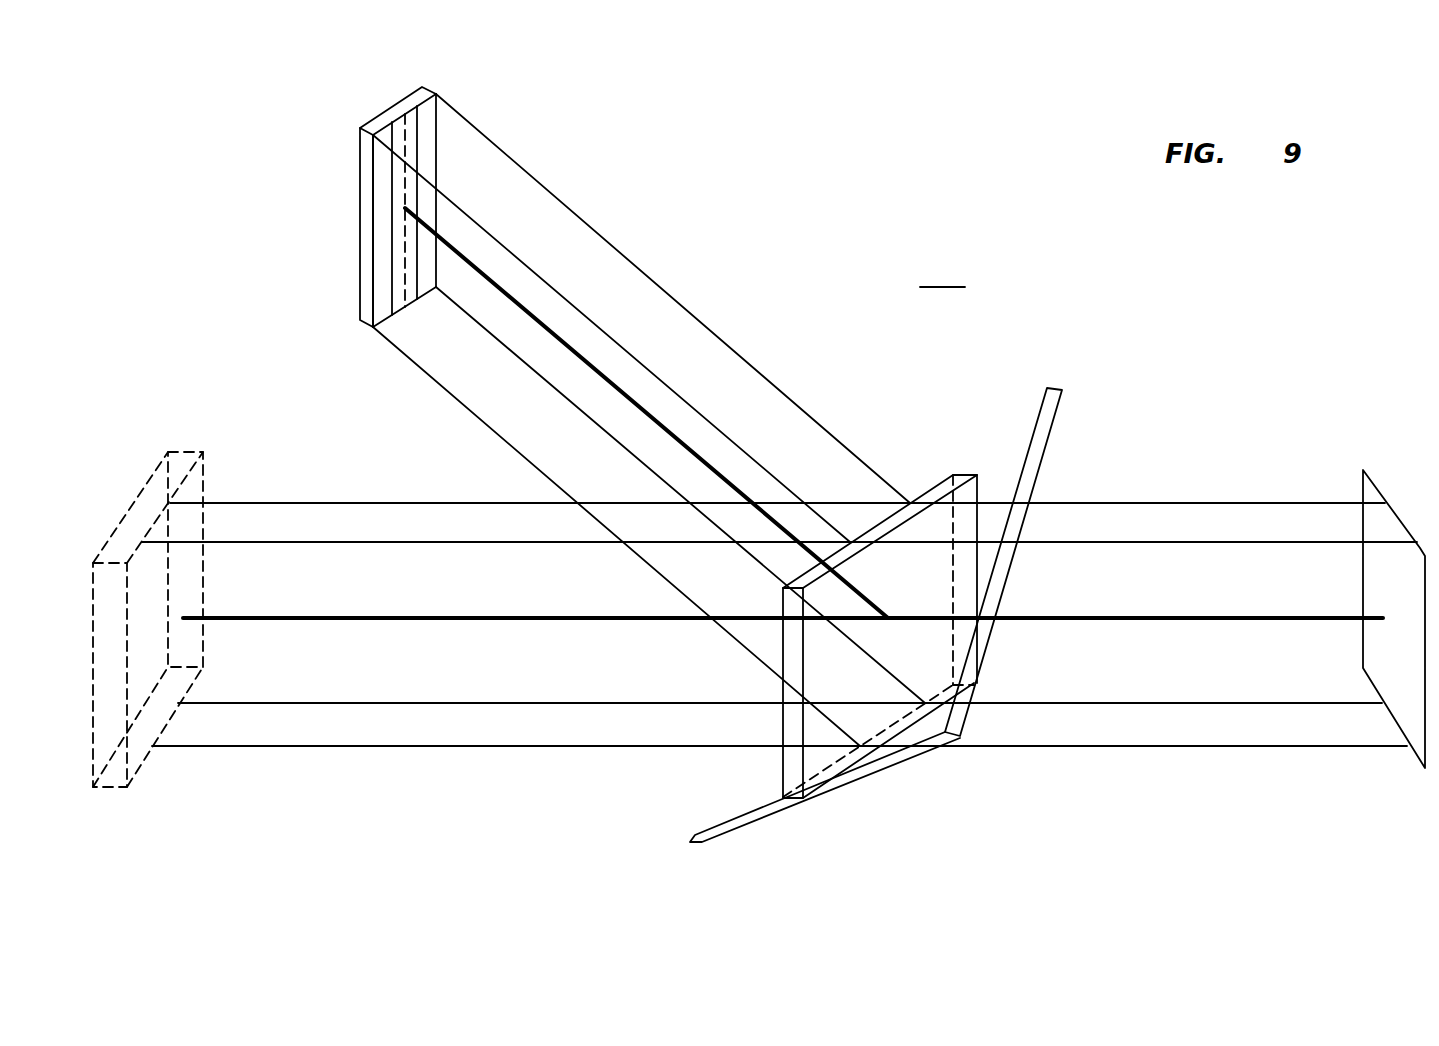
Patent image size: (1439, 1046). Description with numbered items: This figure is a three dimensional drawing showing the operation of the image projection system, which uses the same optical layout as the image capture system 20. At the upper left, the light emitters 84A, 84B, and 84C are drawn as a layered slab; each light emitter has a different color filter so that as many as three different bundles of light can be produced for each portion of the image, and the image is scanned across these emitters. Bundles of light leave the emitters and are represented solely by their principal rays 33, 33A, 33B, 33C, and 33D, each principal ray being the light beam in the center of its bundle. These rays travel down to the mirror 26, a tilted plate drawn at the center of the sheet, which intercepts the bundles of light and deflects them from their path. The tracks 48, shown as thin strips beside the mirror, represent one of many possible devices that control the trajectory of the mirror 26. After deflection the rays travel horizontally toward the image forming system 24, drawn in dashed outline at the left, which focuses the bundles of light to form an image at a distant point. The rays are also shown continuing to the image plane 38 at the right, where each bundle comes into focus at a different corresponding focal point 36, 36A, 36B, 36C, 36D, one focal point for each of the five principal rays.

The image capture system 20 is at (942, 271).
The image forming system 24 is at (162, 467).
The mirror 26 is at (940, 488).
The principal ray 33 is at (520, 302).
The principal ray 33A is at (683, 398).
The principal ray 33B is at (663, 288).
The principal ray 33C is at (448, 393).
The principal ray 33D is at (520, 357).
The corresponding focal point 36 is at (1382, 620).
The corresponding focal point 36A is at (1412, 556).
The corresponding focal point 36B is at (1380, 500).
The corresponding focal point 36C is at (1407, 749).
The corresponding focal point 36D is at (1382, 704).
The image plane 38 is at (1363, 488).
The tracks 48 is at (1055, 412).
The light emitter 84A is at (378, 173).
The light emitter 84B is at (413, 108).
The light emitter 84C is at (427, 120).